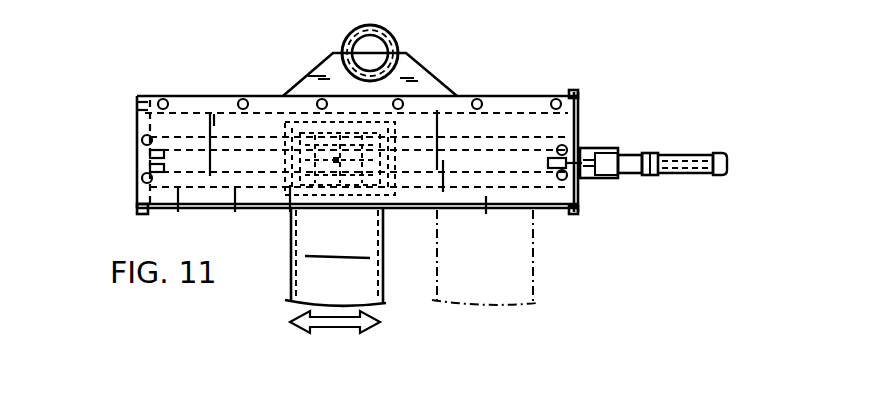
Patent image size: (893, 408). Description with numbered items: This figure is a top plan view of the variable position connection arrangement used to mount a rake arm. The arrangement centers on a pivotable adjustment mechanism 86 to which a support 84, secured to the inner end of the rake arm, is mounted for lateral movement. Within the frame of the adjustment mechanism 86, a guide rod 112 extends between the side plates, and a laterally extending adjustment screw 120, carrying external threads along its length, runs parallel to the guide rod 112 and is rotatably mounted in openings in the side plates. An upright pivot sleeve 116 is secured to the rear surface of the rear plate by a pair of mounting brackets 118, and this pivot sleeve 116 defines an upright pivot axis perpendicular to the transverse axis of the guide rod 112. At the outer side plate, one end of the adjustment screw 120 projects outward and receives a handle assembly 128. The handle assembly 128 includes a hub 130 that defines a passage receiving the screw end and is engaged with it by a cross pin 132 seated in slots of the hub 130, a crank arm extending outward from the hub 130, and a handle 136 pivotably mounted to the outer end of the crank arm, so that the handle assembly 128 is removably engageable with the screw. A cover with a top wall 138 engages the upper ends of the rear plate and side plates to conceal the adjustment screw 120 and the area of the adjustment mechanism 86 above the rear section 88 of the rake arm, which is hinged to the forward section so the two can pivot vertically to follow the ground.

The pivotable adjustment mechanism 86 is at (618, 76).
The top wall 138 is at (197, 108).
The pivot sleeve 116 is at (392, 35).
The mounting brackets 118 is at (434, 75).
The handle assembly 128 is at (680, 173).
The cross pin 132 is at (612, 147).
The hub 130 is at (608, 150).
The handle 136 is at (700, 152).
The guide rod 112 is at (179, 220).
The support 84 is at (250, 8).
The adjustment screw 120 is at (236, 214).
The rear section 88 is at (388, 280).